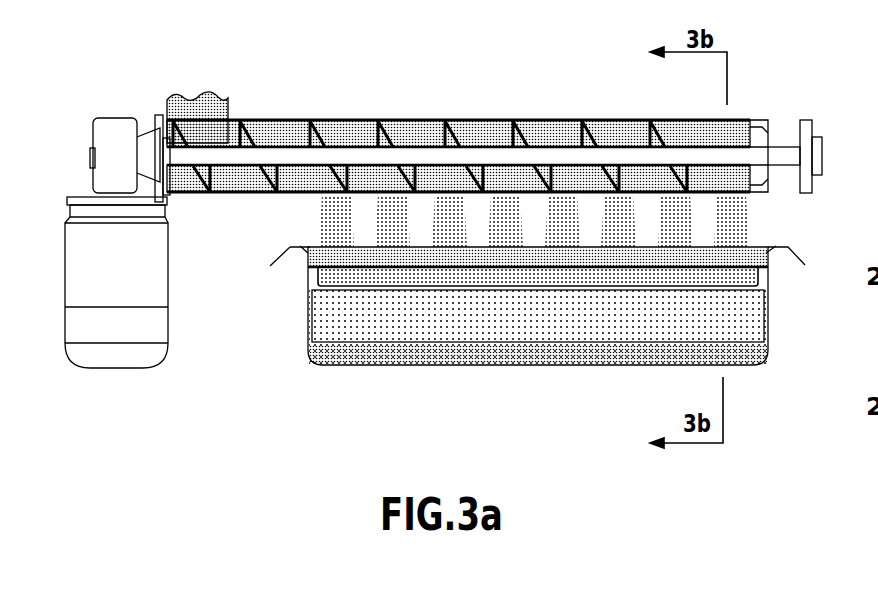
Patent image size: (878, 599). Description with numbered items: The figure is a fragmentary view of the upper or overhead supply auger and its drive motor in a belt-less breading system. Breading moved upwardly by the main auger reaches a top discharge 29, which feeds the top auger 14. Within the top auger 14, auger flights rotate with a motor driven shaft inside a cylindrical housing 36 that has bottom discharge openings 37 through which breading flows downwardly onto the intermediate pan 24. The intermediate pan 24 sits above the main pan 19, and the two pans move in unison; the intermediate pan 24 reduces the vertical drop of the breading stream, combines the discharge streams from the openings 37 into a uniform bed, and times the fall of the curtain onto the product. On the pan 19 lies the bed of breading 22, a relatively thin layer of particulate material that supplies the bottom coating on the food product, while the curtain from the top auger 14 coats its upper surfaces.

The top auger 14 is at (467, 113).
The pan 19 is at (308, 340).
The bed of breading 22 is at (585, 353).
The intermediate pan 24 is at (308, 262).
The top discharge 29 is at (213, 103).
The cylindrical housing 36 is at (745, 120).
The bottom discharge openings 37 is at (733, 190).